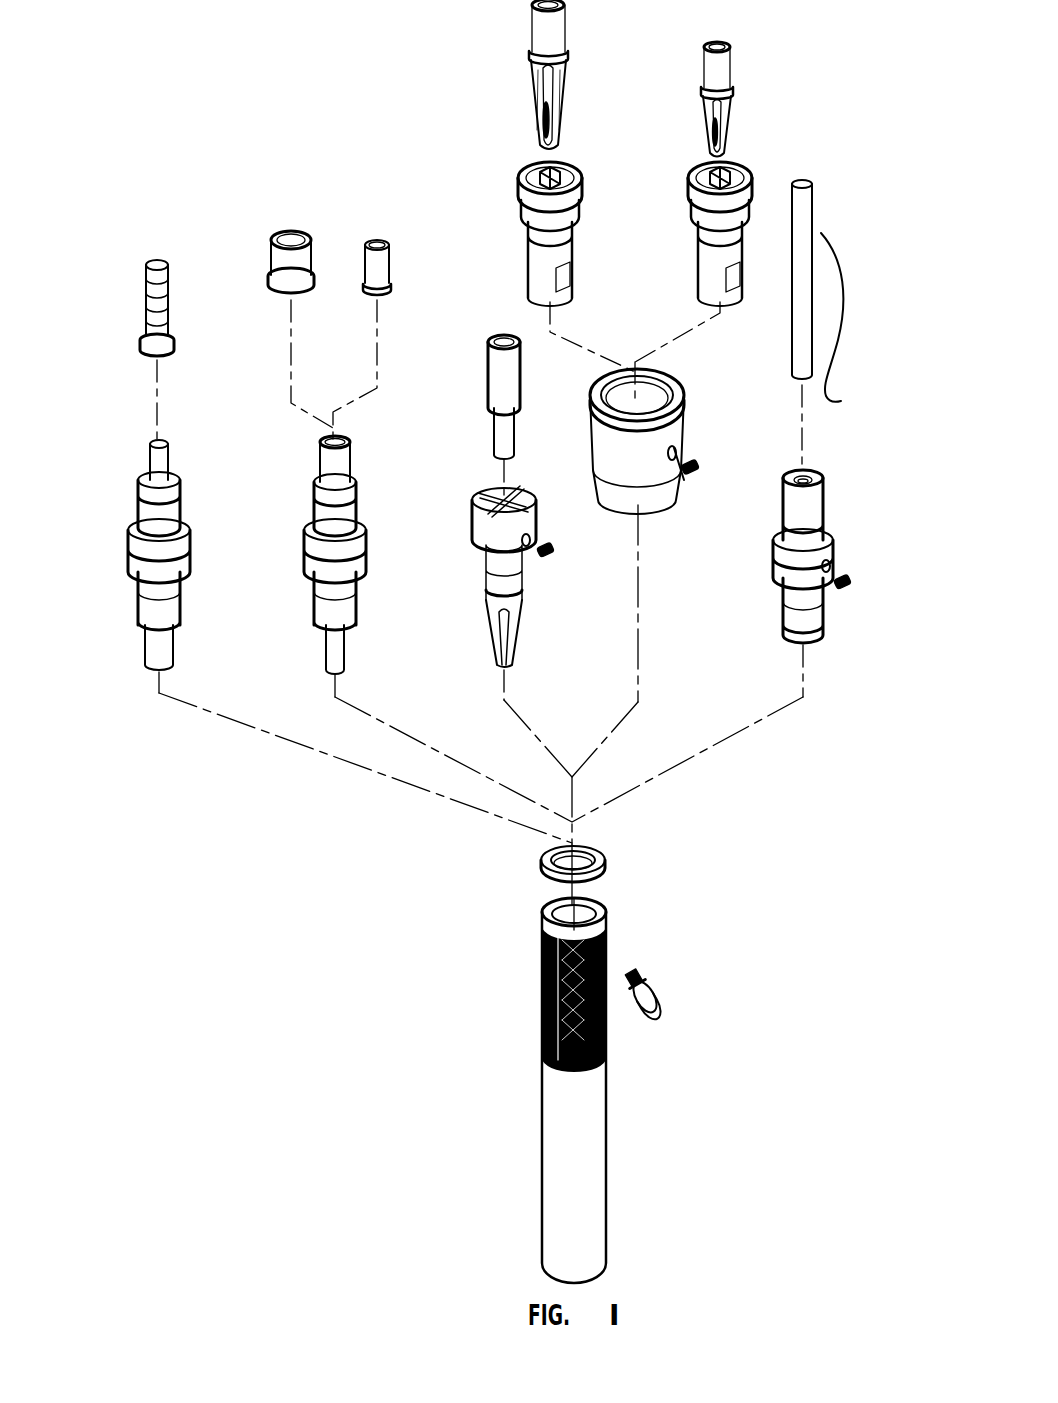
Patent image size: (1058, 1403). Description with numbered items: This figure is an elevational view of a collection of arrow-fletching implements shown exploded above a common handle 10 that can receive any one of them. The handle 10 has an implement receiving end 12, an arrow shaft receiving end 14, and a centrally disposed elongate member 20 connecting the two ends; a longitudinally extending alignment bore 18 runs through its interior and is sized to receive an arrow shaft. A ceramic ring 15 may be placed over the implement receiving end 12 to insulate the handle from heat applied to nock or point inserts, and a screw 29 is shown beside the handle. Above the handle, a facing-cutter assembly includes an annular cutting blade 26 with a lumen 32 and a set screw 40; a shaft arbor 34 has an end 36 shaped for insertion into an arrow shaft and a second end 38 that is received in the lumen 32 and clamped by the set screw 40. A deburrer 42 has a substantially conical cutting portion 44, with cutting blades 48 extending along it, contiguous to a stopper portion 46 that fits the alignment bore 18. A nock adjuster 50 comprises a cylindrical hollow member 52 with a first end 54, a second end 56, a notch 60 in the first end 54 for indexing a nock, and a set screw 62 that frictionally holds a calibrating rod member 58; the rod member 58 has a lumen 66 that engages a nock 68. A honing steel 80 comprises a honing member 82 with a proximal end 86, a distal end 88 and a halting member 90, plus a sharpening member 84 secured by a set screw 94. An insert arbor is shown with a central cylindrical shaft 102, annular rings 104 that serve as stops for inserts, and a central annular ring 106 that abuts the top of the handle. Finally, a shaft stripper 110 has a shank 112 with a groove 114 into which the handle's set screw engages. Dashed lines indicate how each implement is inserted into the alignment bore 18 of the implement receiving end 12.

The handle 10 is at (581, 1086).
The implement receiving end 12 is at (602, 911).
The arrow shaft receiving end 14 is at (610, 1282).
The ceramic ring 15 is at (605, 860).
The alignment bore 18 is at (562, 921).
The elongate member 20 is at (548, 1117).
The annular cutting blade 26 is at (516, 596).
The thumb screw 29 is at (660, 995).
The lumen 32 is at (530, 495).
The shaft arbor 34 is at (470, 402).
The end of shaft arbor 36 is at (496, 338).
The second end of shaft arbor 38 is at (495, 455).
The set screw 40 is at (557, 548).
The deburrer 42 is at (522, 615).
The conical cutting portion 44 is at (492, 622).
The stopper portion 46 is at (520, 565).
The cutting blades 48 is at (512, 640).
The nock adjuster 50 is at (657, 413).
The cylindrical hollow member 52 is at (668, 432).
The first end 54 is at (662, 386).
The second end 56 is at (646, 488).
The calibrating rod member 58 is at (582, 198).
The notch 60 is at (598, 450).
The set screw 62 is at (698, 467).
The lumen 66 is at (562, 172).
The nock 68 is at (563, 80).
The honing steel 80 is at (844, 325).
The honing member 82 is at (798, 592).
The sharpening member 84 is at (830, 325).
The proximal end 86 is at (812, 648).
The distal end 88 is at (785, 497).
The halting member 90 is at (775, 566).
The set screw 94 is at (845, 580).
The central cylindrical shaft 102 is at (151, 454).
The annular rings 104 is at (140, 506).
The central annular ring 106 is at (130, 556).
The shaft stripper 110 is at (152, 295).
The shank 112 is at (277, 262).
The groove 114 is at (392, 270).